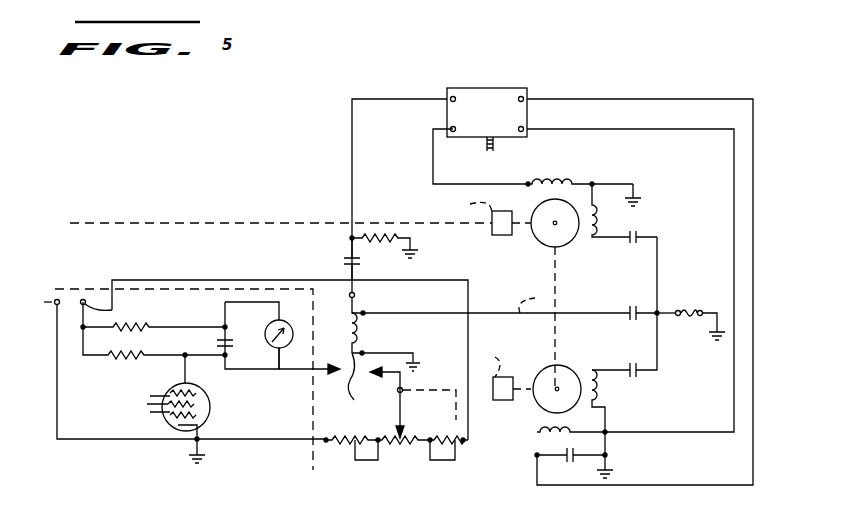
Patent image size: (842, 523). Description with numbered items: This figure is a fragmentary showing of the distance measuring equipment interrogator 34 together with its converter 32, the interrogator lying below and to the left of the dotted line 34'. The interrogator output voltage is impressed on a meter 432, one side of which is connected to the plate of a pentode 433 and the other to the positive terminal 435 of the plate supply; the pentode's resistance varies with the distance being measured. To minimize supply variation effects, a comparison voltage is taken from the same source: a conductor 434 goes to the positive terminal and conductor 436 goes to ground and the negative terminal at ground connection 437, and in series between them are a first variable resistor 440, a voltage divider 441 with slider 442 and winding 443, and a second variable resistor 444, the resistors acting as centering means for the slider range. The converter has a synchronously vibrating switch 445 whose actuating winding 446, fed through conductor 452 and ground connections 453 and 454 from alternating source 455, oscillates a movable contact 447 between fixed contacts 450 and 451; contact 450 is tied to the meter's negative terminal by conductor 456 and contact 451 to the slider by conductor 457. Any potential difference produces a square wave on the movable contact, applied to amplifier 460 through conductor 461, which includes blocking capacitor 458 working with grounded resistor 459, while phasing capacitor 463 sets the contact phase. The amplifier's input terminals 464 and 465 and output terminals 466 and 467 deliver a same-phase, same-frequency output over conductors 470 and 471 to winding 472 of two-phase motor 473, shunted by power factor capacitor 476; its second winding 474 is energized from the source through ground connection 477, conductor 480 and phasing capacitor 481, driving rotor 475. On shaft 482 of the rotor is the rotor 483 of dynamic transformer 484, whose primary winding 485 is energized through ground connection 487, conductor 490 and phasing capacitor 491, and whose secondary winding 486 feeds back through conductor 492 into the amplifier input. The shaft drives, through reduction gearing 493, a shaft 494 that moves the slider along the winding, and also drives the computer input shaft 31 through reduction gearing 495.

The input shaft 31 is at (258, 223).
The converter 32 is at (330, 188).
The interrogator 34 is at (110, 395).
The dotted line 34' is at (184, 353).
The meter 432 is at (266, 330).
The pentode 433 is at (210, 400).
The conductor 434 is at (148, 280).
The positive terminal 435 is at (96, 310).
The conductor 436 is at (230, 439).
The ground connection 437 is at (190, 448).
The first variable resistor 440 is at (345, 448).
The voltage divider 441 is at (405, 442).
The slider 442 is at (396, 416).
The winding 443 is at (397, 440).
The second variable resistor 444 is at (451, 447).
The synchronously vibrating switch 445 is at (333, 345).
The actuating winding 446 is at (357, 323).
The movable contact 447 is at (357, 385).
The fixed contact 450 is at (333, 376).
The fixed contact 451 is at (385, 380).
The conductor 452 is at (410, 313).
The ground connection 453 is at (405, 355).
The ground connection 454 is at (712, 340).
The source of alternating voltage 455 is at (688, 302).
The conductor 456 is at (295, 369).
The conductor 457 is at (403, 384).
The blocking capacitor 458 is at (344, 260).
The grounded resistor 459 is at (383, 242).
The amplifier 460 is at (500, 88).
The conductor 461 is at (352, 138).
The phasing capacitor 463 is at (624, 298).
The input terminal 464 is at (453, 96).
The input terminal 465 is at (453, 132).
The output terminal 466 is at (524, 97).
The output terminal 467 is at (523, 132).
The conductor 470 is at (670, 99).
The conductor 471 is at (632, 129).
The winding 472 is at (540, 430).
The two-phase motor 473 is at (580, 364).
The second winding 474 is at (597, 388).
The rotor 475 is at (548, 366).
The capacitor 476 is at (573, 463).
The ground connection 477 is at (608, 465).
The conductor 480 is at (657, 365).
The phasing capacitor 481 is at (627, 358).
The shaft 482 is at (499, 291).
The rotor 483 is at (566, 238).
The dynamic transformer 484 is at (580, 238).
The primary winding 485 is at (597, 220).
The secondary winding 486 is at (556, 177).
The ground connection 487 is at (636, 190).
The conductor 490 is at (657, 272).
The phasing capacitor 491 is at (646, 231).
The conductor 492 is at (433, 182).
The reduction gearing 493 is at (503, 400).
The shaft 494 is at (448, 410).
The reduction gearing 495 is at (502, 235).